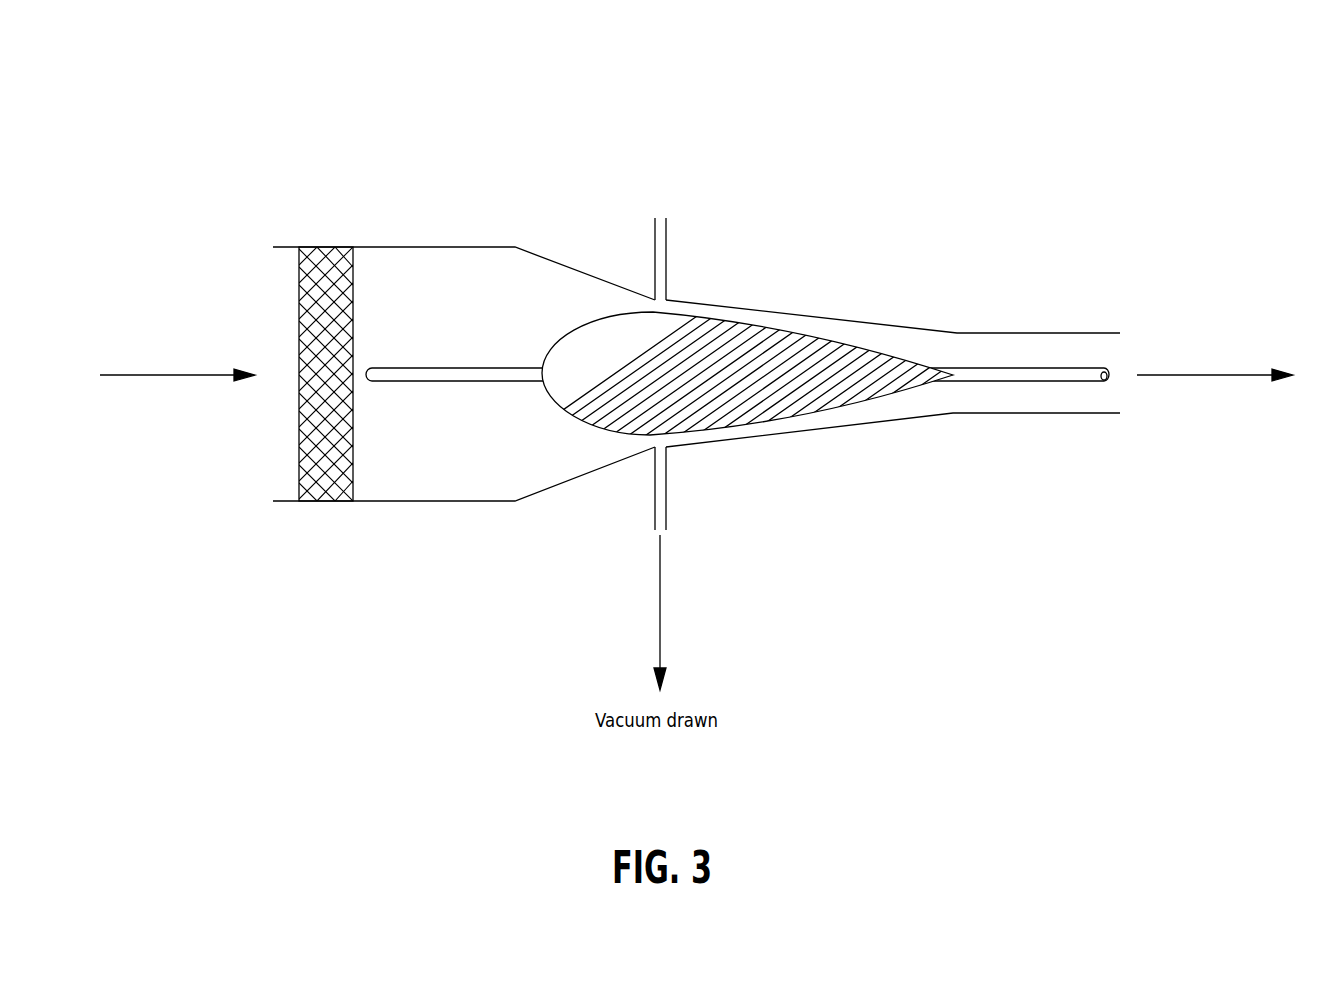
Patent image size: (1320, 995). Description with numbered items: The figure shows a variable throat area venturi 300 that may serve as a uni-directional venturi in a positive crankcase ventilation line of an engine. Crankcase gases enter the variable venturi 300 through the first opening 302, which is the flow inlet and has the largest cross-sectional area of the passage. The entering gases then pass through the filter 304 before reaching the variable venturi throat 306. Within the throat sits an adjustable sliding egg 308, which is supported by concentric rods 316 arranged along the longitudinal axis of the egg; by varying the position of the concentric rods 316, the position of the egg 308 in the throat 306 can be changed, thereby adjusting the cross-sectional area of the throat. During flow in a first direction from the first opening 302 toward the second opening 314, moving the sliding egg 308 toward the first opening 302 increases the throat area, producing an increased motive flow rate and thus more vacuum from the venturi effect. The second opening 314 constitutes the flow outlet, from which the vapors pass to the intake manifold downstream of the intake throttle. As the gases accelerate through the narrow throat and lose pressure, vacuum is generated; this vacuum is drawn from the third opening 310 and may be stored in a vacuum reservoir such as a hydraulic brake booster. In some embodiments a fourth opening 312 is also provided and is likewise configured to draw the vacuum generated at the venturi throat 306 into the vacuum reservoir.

The variable throat area venturi 300 is at (1252, 70).
The first opening 302 is at (243, 295).
The filter 304 is at (323, 252).
The variable venturi throat 306 is at (708, 318).
The sliding egg 308 is at (748, 345).
The third opening 310 is at (680, 508).
The fourth opening 312 is at (645, 232).
The second opening 314 is at (1157, 325).
The concentric rods 316 is at (403, 366).